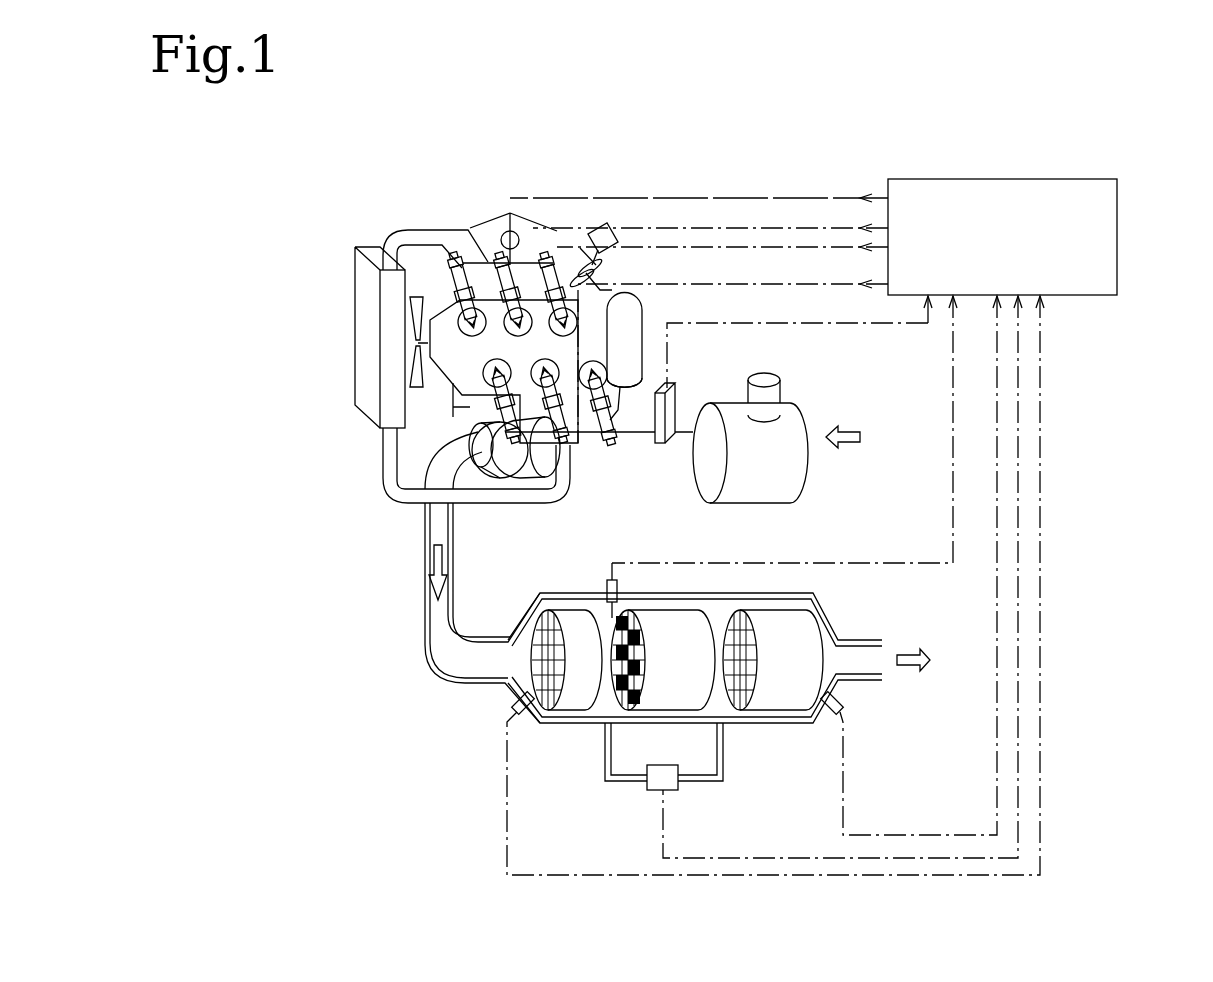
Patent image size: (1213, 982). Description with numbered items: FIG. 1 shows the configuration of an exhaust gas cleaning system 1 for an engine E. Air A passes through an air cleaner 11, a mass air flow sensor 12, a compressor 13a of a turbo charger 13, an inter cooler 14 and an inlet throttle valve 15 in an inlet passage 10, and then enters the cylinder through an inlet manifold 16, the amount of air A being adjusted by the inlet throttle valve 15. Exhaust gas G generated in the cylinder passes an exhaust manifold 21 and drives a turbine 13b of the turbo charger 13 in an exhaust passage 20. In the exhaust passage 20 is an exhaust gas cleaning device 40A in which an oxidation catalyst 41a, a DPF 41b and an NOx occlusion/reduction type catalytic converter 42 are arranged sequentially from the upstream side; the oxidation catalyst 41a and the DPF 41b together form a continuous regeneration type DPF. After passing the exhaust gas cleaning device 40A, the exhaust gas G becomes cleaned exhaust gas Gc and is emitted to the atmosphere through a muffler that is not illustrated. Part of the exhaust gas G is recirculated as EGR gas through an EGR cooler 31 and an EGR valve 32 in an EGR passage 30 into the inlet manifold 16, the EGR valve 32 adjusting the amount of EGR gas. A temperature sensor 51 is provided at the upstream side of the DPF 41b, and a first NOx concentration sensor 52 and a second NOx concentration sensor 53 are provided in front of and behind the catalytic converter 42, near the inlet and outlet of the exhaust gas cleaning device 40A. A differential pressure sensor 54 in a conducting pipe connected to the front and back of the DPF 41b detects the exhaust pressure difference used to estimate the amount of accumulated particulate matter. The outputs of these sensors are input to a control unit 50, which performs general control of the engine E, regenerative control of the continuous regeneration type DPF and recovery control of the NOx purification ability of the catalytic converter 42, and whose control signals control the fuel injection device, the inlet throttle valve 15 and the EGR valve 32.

The exhaust gas cleaning system 1 is at (896, 163).
The engine E is at (388, 226).
The inlet passage 10 is at (383, 482).
The air cleaner 11 is at (797, 405).
The mass air flow sensor 12 is at (672, 402).
The turbo charger 13 is at (552, 504).
The compressor 13a is at (521, 478).
The turbine 13b is at (510, 470).
The inter cooler 14 is at (357, 370).
The inlet throttle valve 15 is at (498, 225).
The inlet manifold 16 is at (480, 265).
The exhaust passage 20 is at (428, 662).
The exhaust manifold 21 is at (457, 410).
The EGR passage 30 is at (620, 292).
The EGR cooler 31 is at (640, 320).
The EGR valve 32 is at (598, 225).
The exhaust gas cleaning device 40A is at (570, 724).
The oxidation catalyst 41a is at (575, 620).
The DPF 41b is at (680, 625).
The NOx occlusion/reduction type catalytic converter 42 is at (795, 625).
The control unit 50 is at (1117, 202).
The temperature sensor 51 is at (612, 578).
The first NOx concentration sensor 52 is at (520, 710).
The second NOx concentration sensor 53 is at (840, 713).
The differential pressure sensor 54 is at (680, 778).
The exhaust gas G is at (428, 562).
The cleaned exhaust gas Gc is at (933, 650).
The air A is at (853, 427).